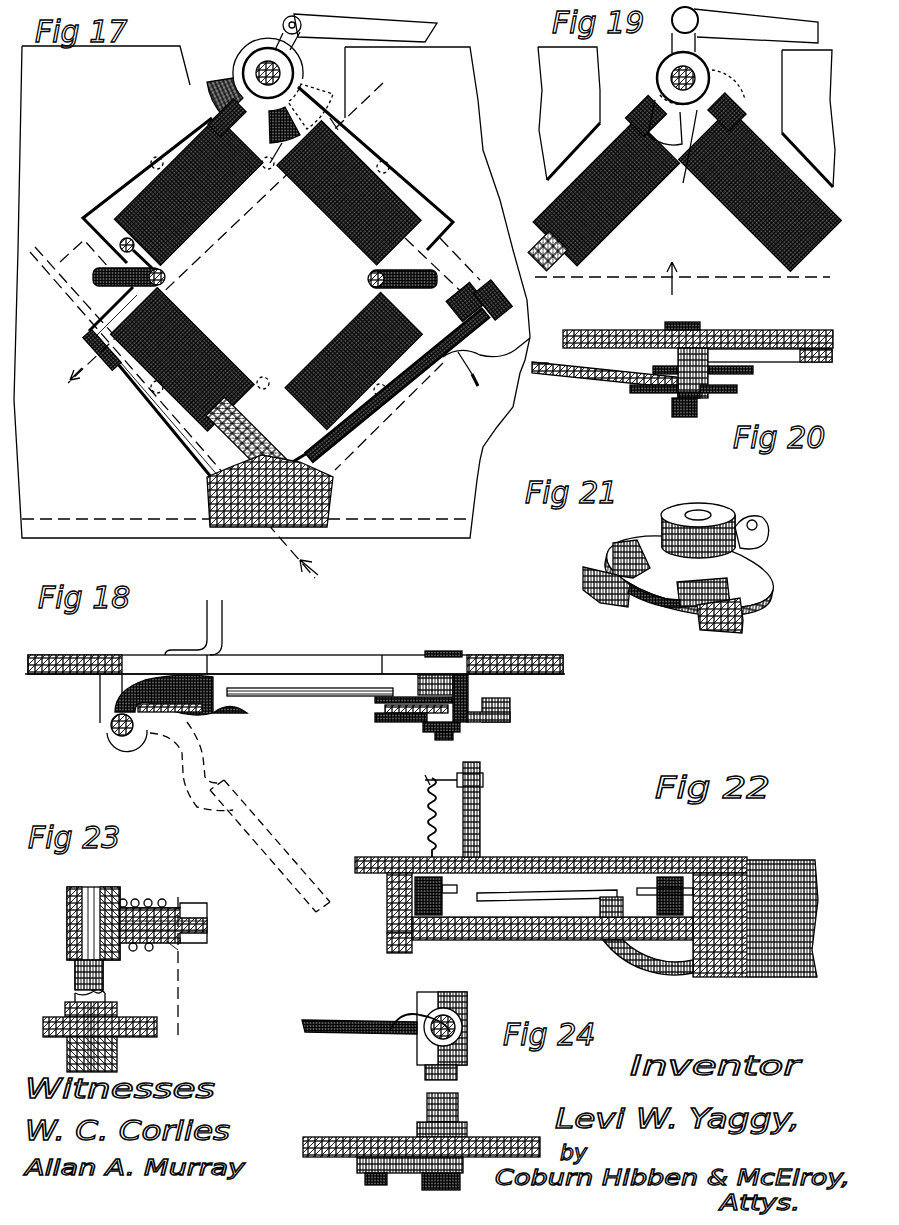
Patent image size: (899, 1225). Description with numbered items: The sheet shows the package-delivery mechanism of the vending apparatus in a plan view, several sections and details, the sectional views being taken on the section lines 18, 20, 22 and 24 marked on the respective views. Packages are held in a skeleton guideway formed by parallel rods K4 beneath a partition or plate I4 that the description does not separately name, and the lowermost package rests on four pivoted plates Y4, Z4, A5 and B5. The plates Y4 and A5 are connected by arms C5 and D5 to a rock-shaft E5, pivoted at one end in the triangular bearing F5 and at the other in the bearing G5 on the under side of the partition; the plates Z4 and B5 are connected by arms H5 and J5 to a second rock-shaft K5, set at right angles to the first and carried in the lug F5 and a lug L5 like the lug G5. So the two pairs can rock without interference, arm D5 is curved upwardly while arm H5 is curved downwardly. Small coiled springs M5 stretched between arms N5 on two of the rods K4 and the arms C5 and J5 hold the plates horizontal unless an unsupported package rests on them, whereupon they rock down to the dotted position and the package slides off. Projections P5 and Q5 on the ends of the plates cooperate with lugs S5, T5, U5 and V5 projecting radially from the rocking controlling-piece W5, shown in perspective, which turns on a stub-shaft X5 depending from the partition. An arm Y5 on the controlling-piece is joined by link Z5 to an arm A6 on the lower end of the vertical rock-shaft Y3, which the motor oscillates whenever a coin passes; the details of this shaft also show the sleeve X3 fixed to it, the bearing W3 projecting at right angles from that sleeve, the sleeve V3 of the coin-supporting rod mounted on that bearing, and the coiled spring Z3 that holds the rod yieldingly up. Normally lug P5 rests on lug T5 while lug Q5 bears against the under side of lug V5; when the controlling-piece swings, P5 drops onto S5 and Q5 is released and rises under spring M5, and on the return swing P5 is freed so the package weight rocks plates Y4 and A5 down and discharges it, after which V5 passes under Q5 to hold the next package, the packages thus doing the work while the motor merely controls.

In FIG. 17, the base plate I4 is at (281, 292).
In FIG. 20, the base plate I4 is at (720, 332).
In FIG. 18, the base plate I4 is at (295, 664).
In FIG. 22, the base plate I4 is at (551, 842).
In FIG. 24, the base plate I4 is at (352, 1125).
In FIG. 17, the projection P5 is at (212, 118).
In FIG. 19, the projection P5 is at (636, 120).
In FIG. 18, the projection P5 is at (395, 690).
In FIG. 17, the projection S5 is at (216, 82).
In FIG. 19, the projection S5 is at (643, 108).
In FIG. 20, the projection S5 is at (655, 392).
In FIG. 21, the projection S5 is at (600, 587).
In FIG. 18, the projection S5 is at (385, 722).
In FIG. 17, the rocking controlling-piece W5 is at (248, 70).
In FIG. 19, the rocking controlling-piece W5 is at (683, 78).
In FIG. 21, the rocking controlling-piece W5 is at (613, 540).
In FIG. 17, the stub-shaft X5 is at (268, 60).
In FIG. 19, the stub-shaft X5 is at (683, 78).
In FIG. 20, the stub-shaft X5 is at (685, 320).
In FIG. 18, the stub-shaft X5 is at (445, 650).
In FIG. 17, the arm Y5 is at (292, 45).
In FIG. 19, the arm Y5 is at (700, 48).
In FIG. 21, the arm Y5 is at (767, 545).
In FIG. 18, the arm Y5 is at (510, 718).
In FIG. 17, the link Z5 is at (428, 40).
In FIG. 19, the link Z5 is at (756, 26).
In FIG. 18, the link Z5 is at (510, 705).
In FIG. 24, the link Z5 is at (365, 1180).
In FIG. 17, the projection V5 is at (315, 100).
In FIG. 19, the projection V5 is at (745, 92).
In FIG. 20, the projection V5 is at (755, 375).
In FIG. 21, the projection V5 is at (767, 587).
In FIG. 18, the projection V5 is at (468, 690).
In FIG. 17, the projection Q5 is at (338, 123).
In FIG. 19, the projection Q5 is at (733, 120).
In FIG. 17, the projection T5 is at (270, 124).
In FIG. 20, the projection T5 is at (686, 416).
In FIG. 21, the projection T5 is at (653, 600).
In FIG. 18, the projection T5 is at (400, 695).
In FIG. 17, the projection U5 is at (283, 163).
In FIG. 19, the projection U5 is at (672, 154).
In FIG. 20, the projection U5 is at (732, 402).
In FIG. 21, the projection U5 is at (722, 632).
In FIG. 18, the projection U5 is at (420, 728).
In FIG. 17, the arm C5 is at (124, 238).
In FIG. 18, the arm C5 is at (212, 695).
In FIG. 17, the plate Y4 is at (188, 191).
In FIG. 20, the plate Y4 is at (604, 385).
In FIG. 18, the plate Y4 is at (310, 710).
In FIG. 22, the plate Y4 is at (460, 888).
In FIG. 17, the plate B5 is at (349, 193).
In FIG. 20, the plate B5 is at (815, 365).
In FIG. 18, the plate B5 is at (385, 708).
In FIG. 17, the parallel rods K4 is at (368, 278).
In FIG. 22, the parallel rods K4 is at (478, 828).
In FIG. 17, the bearing G5 is at (104, 274).
In FIG. 18, the bearing G5 is at (148, 712).
In FIG. 22, the bearing G5 is at (387, 912).
In FIG. 17, the arm J5 is at (463, 288).
In FIG. 17, the lug L5 is at (493, 285).
In FIG. 17, the plate A5 is at (353, 360).
In FIG. 22, the plate A5 is at (645, 888).
In FIG. 17, the arm H5 is at (262, 423).
In FIG. 22, the arm H5 is at (668, 973).
In FIG. 17, the rock-shaft K5 is at (476, 375).
In FIG. 17, the rock-shaft E5 is at (195, 449).
In FIG. 18, the rock-shaft E5 is at (110, 730).
In FIG. 22, the rock-shaft E5 is at (525, 940).
In FIG. 17, the arm D5 is at (300, 425).
In FIG. 22, the arm D5 is at (680, 877).
In FIG. 17, the triangular bearing F5 is at (240, 527).
In FIG. 22, the triangular bearing F5 is at (730, 975).
In FIG. 17, the plate Z4 is at (183, 360).
In FIG. 18, the plate Z4 is at (195, 713).
In FIG. 22, the plate Z4 is at (575, 900).
In FIG. 22, the arms N5 is at (480, 780).
In FIG. 22, the coiled springs M5 is at (426, 816).
In FIG. 23, the sleeve X3 is at (67, 925).
In FIG. 24, the sleeve X3 is at (440, 992).
In FIG. 23, the coiled spring Z3 is at (132, 898).
In FIG. 23, the bearing W3 is at (207, 925).
In FIG. 24, the bearing W3 is at (460, 1040).
In FIG. 23, the sleeve V3 is at (168, 943).
In FIG. 24, the sleeve V3 is at (420, 1035).
In FIG. 23, the rock-shaft Y3 is at (103, 980).
In FIG. 24, the rock-shaft Y3 is at (458, 1105).
In FIG. 23, the arm A6 is at (67, 1052).
In FIG. 24, the arm A6 is at (357, 1165).
In FIG. 17, the section line 18 is at (231, 249).
In FIG. 19, the section line 20 is at (683, 286).
In FIG. 17, the section line 22 is at (190, 410).
In FIG. 23, the section line 24 is at (185, 973).